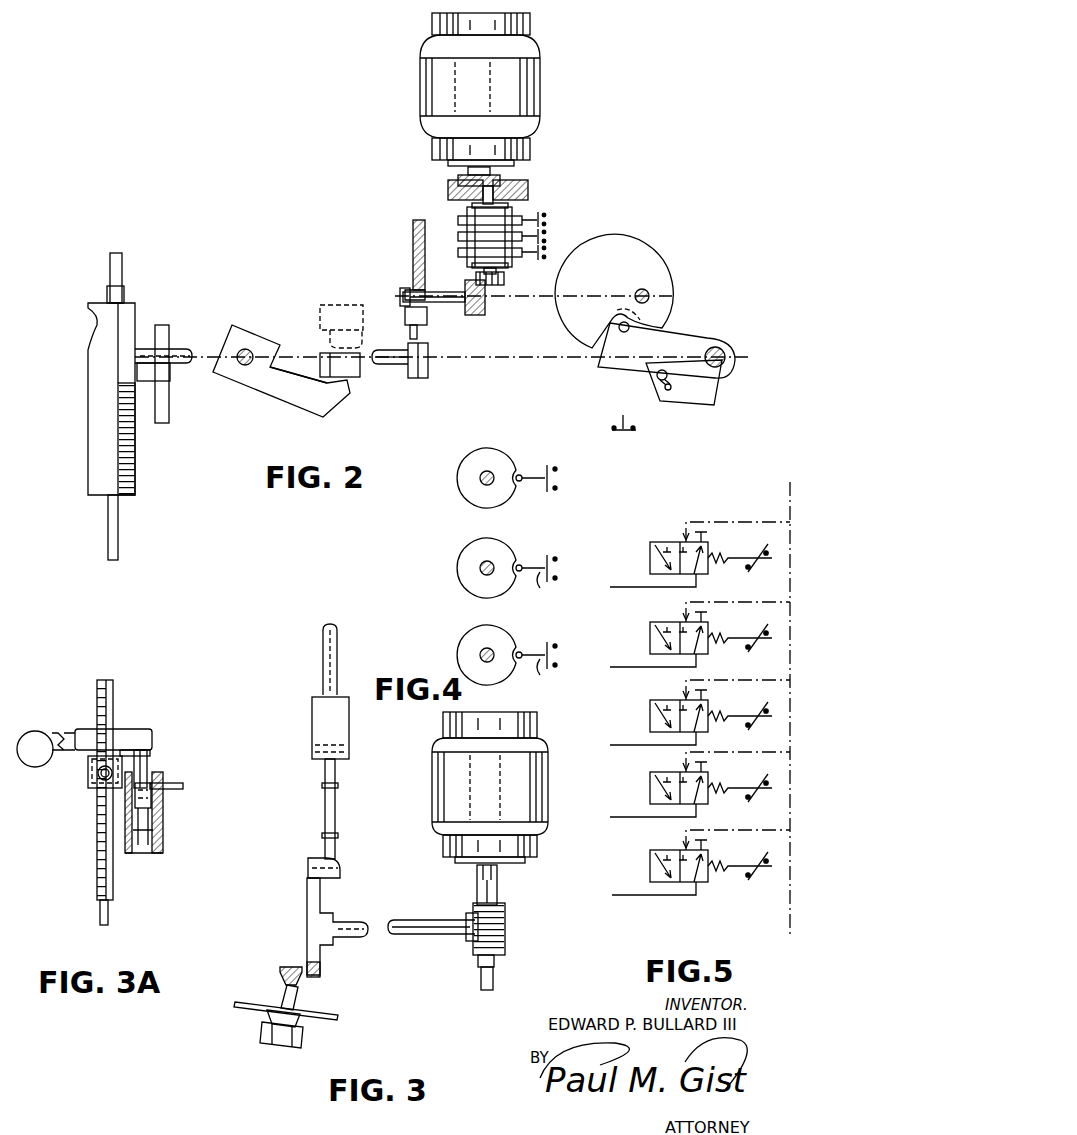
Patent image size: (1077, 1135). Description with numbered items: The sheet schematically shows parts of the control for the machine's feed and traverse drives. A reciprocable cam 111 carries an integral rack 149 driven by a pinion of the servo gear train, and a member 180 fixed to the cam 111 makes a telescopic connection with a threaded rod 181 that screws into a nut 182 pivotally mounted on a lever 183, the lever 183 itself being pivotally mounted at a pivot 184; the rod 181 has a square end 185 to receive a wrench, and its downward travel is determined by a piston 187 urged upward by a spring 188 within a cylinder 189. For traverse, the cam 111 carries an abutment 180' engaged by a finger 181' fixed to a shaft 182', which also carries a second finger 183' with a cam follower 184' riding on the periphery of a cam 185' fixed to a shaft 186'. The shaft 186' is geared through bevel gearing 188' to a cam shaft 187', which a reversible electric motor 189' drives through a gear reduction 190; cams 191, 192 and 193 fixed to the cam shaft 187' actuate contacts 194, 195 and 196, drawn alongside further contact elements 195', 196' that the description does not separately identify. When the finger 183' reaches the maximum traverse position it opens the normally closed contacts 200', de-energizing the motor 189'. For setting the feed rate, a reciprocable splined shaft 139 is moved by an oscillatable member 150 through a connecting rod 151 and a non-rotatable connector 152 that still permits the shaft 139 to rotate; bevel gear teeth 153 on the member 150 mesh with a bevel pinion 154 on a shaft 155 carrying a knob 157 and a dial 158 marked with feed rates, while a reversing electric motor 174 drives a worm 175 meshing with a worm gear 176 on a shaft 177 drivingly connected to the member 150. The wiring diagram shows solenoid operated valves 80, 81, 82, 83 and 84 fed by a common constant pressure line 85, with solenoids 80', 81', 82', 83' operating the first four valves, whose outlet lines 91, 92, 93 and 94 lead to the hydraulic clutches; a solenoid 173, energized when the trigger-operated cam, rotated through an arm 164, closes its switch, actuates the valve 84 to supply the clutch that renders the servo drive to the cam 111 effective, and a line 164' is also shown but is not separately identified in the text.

In FIG. 5, the solenoid operated valve 80 is at (704, 548).
In FIG. 5, the solenoid operated valve 81 is at (704, 628).
In FIG. 5, the solenoid operated valve 82 is at (704, 706).
In FIG. 5, the solenoid operated valve 83 is at (704, 778).
In FIG. 5, the solenoid operated valve 84 is at (651, 868).
In FIG. 5, the solenoid 80' is at (751, 548).
In FIG. 5, the solenoid 81' is at (751, 628).
In FIG. 5, the solenoid 82' is at (751, 706).
In FIG. 5, the solenoid 83' is at (751, 778).
In FIG. 5, the common constant pressure line 85 is at (788, 502).
In FIG. 5, the outlet line 91 is at (650, 588).
In FIG. 5, the outlet line 92 is at (650, 668).
In FIG. 5, the outlet line 93 is at (650, 746).
In FIG. 5, the outlet line 94 is at (650, 818).
In FIG. 3A, the arm 164 is at (191, 776).
In FIG. 5, the fluid line 164' is at (654, 903).
In FIG. 5, the solenoid 173 is at (764, 864).
In FIG. 2, the reciprocable cam 111 is at (90, 446).
In FIG. 2, the rack 149 is at (136, 477).
In FIG. 2, the member 180 is at (136, 527).
In FIG. 2, the abutment 180' is at (273, 346).
In FIG. 3A, the rod 181 is at (130, 778).
In FIG. 2, the finger 181' is at (243, 410).
In FIG. 3A, the nut 182 is at (87, 792).
In FIG. 2, the shaft 182' is at (489, 360).
In FIG. 3A, the lever 183 is at (98, 723).
In FIG. 2, the finger 183' is at (571, 357).
In FIG. 3A, the pivot 184 is at (46, 769).
In FIG. 2, the cam follower 184' is at (538, 330).
In FIG. 3A, the square end 185 is at (132, 916).
In FIG. 2, the cam 185' is at (541, 284).
In FIG. 2, the shaft 186' is at (524, 301).
In FIG. 3A, the piston 187 is at (168, 765).
In FIG. 2, the cam shaft 187' is at (517, 178).
In FIG. 4, the cam shaft 187' is at (459, 555).
In FIG. 3A, the spring 188 is at (171, 814).
In FIG. 2, the bevel gearing 188' is at (510, 296).
In FIG. 3A, the cylinder 189 is at (168, 818).
In FIG. 2, the reversible electric motor 189' is at (508, 89).
In FIG. 2, the gear reduction 190 is at (433, 193).
In FIG. 2, the cam 191 is at (524, 218).
In FIG. 4, the cam 191 is at (487, 456).
In FIG. 2, the cam 192 is at (459, 235).
In FIG. 4, the cam 192 is at (487, 546).
In FIG. 2, the cam 193 is at (523, 253).
In FIG. 4, the cam 193 is at (487, 633).
In FIG. 2, the contacts 194 is at (549, 220).
In FIG. 4, the contacts 194 is at (560, 478).
In FIG. 2, the contacts 195 is at (557, 233).
In FIG. 4, the contacts 195 is at (545, 555).
In FIG. 2, the contacts 196 is at (557, 251).
In FIG. 4, the contacts 196 is at (546, 643).
In FIG. 4, the switch contact 195' is at (560, 589).
In FIG. 4, the switch contact 196' is at (560, 677).
In FIG. 2, the normally closed contacts 200' is at (609, 413).
In FIG. 3, the reciprocable shaft 139 is at (326, 650).
In FIG. 3, the oscillatable member 150 is at (312, 913).
In FIG. 3, the connecting rod 151 is at (325, 828).
In FIG. 3, the non-rotatable connector 152 is at (316, 728).
In FIG. 3, the bevel gear teeth 153 is at (320, 970).
In FIG. 3, the bevel pinion 154 is at (282, 968).
In FIG. 3, the shaft 155 is at (283, 997).
In FIG. 3, the knob 157 is at (277, 1038).
In FIG. 3, the dial 158 is at (258, 1010).
In FIG. 3, the reversing electric motor 174 is at (544, 786).
In FIG. 3, the worm 175 is at (498, 905).
In FIG. 3, the worm gear 176 is at (505, 940).
In FIG. 3, the shaft 177 is at (421, 928).